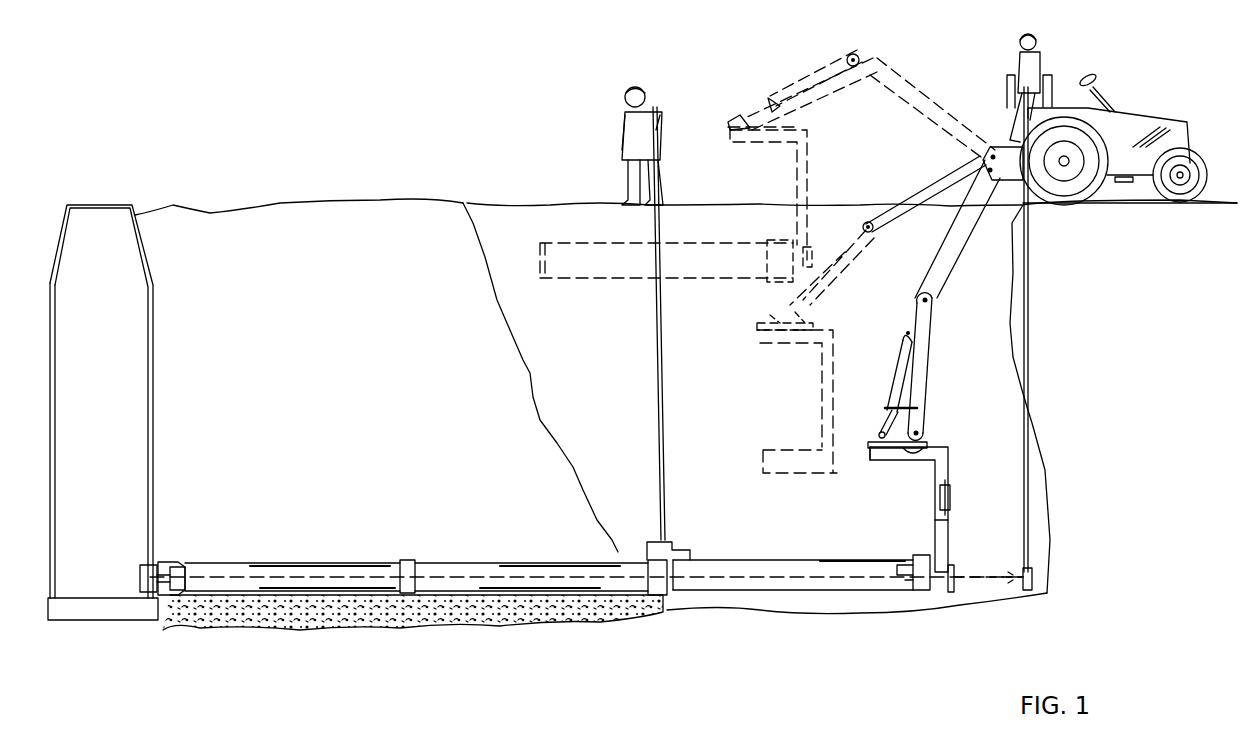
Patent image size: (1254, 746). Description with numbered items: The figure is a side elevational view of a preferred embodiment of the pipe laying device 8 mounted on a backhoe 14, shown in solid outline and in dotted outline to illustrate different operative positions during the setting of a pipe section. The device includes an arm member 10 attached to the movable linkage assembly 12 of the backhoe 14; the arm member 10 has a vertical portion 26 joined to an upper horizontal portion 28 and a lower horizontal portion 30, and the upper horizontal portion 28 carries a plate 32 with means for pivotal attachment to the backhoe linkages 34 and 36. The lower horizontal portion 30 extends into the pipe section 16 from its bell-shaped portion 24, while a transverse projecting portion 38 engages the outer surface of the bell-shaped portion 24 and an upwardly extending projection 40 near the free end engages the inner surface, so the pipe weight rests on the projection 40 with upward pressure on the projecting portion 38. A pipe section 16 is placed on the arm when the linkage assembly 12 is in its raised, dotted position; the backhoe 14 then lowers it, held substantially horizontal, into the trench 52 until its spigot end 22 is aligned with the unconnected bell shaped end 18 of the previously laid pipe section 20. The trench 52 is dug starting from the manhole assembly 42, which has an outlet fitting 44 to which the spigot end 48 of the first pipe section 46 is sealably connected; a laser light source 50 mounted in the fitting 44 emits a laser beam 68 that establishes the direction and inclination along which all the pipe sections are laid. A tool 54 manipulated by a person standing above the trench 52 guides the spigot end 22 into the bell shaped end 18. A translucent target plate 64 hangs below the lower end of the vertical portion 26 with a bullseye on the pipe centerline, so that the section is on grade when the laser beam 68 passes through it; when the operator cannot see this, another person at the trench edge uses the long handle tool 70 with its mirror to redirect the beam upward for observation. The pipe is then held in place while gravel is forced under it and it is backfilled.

The pipe laying device 8 is at (957, 457).
The arm member 10 is at (950, 487).
The backhoe linkage assembly 12 is at (935, 318).
The backhoe 14 is at (1159, 108).
The pipe section 16 is at (762, 556).
The bell shaped end 18 is at (647, 553).
The previously laid pipe section 20 is at (499, 558).
The spigot end 22 is at (680, 603).
The bell-shaped portion 24 is at (913, 558).
The vertical portion 26 is at (950, 520).
The upper horizontal portion 28 is at (873, 462).
The lower horizontal portion 30 is at (897, 567).
The plate 32 is at (927, 443).
The backhoe linkage 34 is at (878, 433).
The backhoe linkage 36 is at (922, 343).
The transverse projecting portion 38 is at (930, 555).
The upwardly extending projection 40 is at (855, 560).
The manhole assembly 42 is at (156, 312).
The outlet fitting 44 is at (143, 567).
The first pipe section 46 is at (311, 561).
The spigot end 48 is at (188, 565).
The laser light source 50 is at (158, 587).
The trench 52 is at (780, 605).
The tool 54 is at (656, 438).
The translucent target plate 64 is at (955, 573).
The laser beam 68 is at (983, 580).
The long handle tool 70 is at (1032, 338).